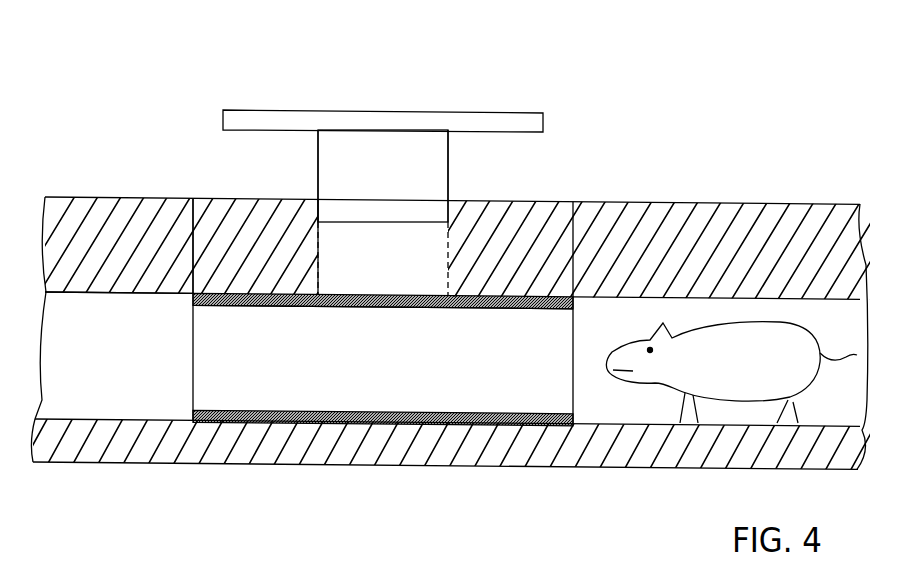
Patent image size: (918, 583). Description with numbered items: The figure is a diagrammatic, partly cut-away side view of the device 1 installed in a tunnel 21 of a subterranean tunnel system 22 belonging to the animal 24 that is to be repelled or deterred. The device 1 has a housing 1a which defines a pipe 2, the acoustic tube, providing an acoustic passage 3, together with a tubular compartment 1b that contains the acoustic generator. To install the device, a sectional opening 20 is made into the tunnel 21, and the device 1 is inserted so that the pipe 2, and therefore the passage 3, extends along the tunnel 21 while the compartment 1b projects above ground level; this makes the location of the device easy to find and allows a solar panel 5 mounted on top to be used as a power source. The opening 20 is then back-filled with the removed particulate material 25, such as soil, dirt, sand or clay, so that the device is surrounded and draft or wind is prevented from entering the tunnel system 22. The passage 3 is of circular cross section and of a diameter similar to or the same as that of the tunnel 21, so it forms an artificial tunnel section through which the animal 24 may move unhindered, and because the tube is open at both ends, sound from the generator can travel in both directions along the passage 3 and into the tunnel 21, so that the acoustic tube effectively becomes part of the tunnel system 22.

The device 1 is at (383, 157).
The housing 1a is at (313, 193).
The tubular compartment 1b is at (424, 176).
The solar panel 5 is at (515, 111).
The particulate material 25 is at (238, 245).
The subterranean tunnel system 22 is at (87, 321).
The pipe 2 is at (505, 295).
The sectional opening 20 is at (568, 247).
The acoustic tube passage 3 is at (516, 324).
The tunnel 21 is at (731, 284).
The animal 24 is at (780, 358).